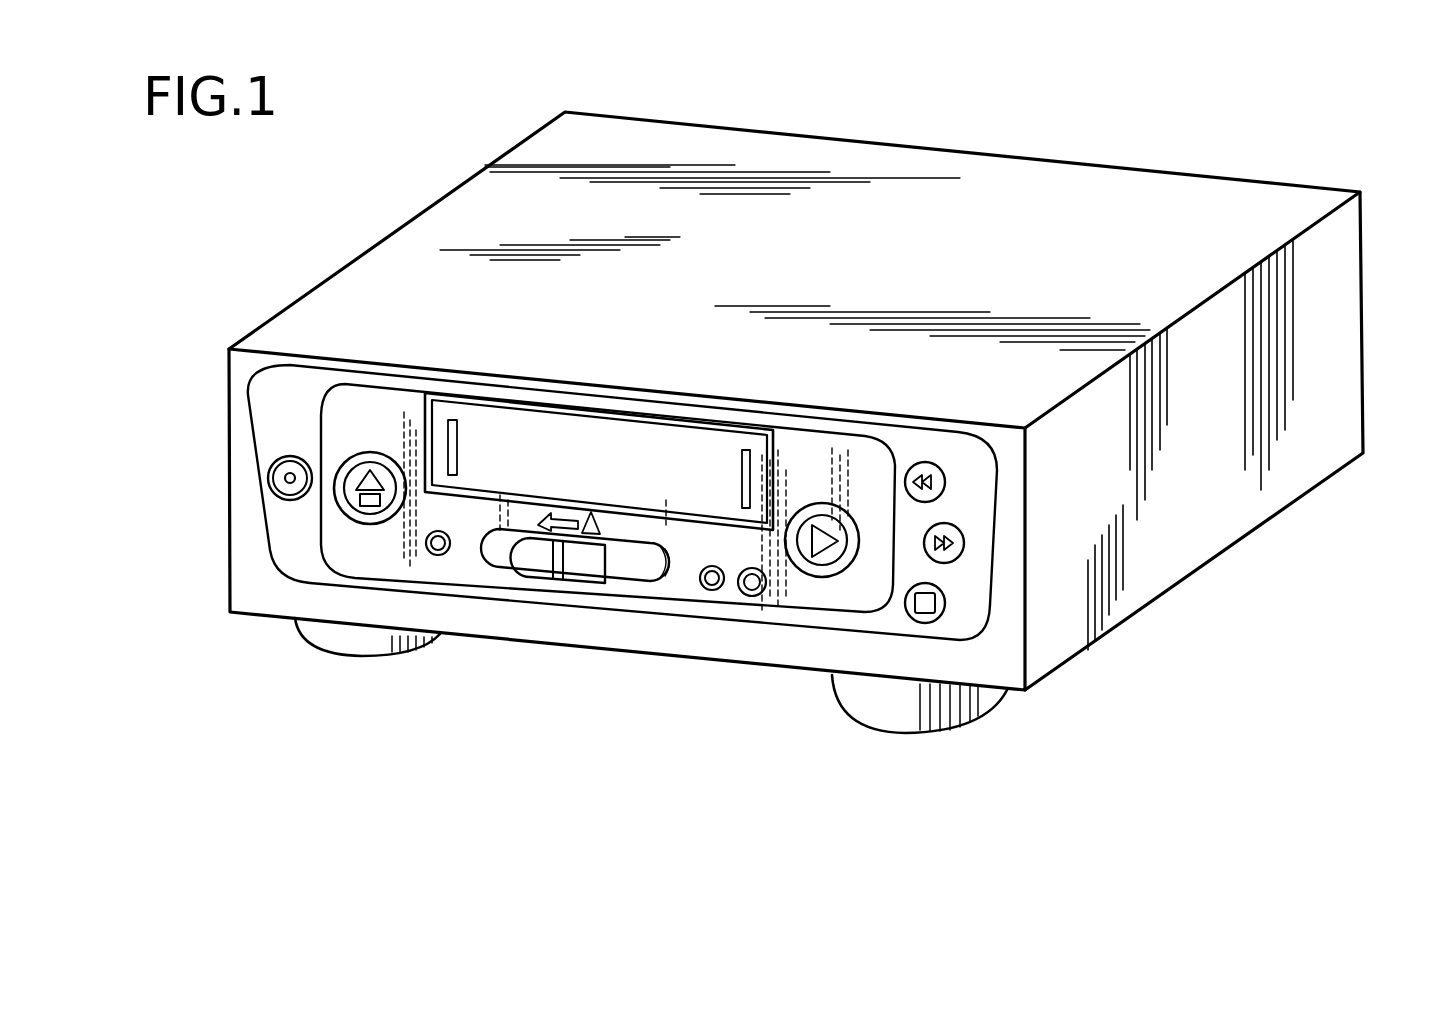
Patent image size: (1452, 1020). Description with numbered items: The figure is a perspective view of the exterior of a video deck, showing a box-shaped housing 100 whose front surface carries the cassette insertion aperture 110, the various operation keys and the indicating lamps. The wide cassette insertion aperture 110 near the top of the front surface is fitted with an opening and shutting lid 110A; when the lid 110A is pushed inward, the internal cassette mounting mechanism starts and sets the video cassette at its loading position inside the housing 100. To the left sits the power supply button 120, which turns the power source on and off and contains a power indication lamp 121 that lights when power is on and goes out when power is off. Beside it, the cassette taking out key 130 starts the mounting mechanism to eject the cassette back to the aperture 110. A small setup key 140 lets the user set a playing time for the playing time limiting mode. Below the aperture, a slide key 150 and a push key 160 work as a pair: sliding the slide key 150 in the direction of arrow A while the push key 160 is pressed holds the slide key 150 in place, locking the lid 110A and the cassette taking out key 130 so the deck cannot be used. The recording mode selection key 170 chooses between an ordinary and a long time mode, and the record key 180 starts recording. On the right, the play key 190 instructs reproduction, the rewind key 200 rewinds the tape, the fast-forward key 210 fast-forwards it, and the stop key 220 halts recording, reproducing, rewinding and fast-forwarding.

The housing 100 is at (1352, 335).
The cassette insertion aperture 110 is at (658, 450).
The opening and shutting lid 110A is at (530, 423).
The power supply button 120 is at (268, 469).
The power indication lamp 121 is at (290, 494).
The cassette taking out key 130 is at (370, 514).
The setup key 140 is at (438, 556).
The slide key 150 is at (532, 578).
The push key 160 is at (645, 582).
The recording mode selection key 170 is at (712, 591).
The record key 180 is at (752, 597).
The play key 190 is at (822, 560).
The rewind key 200 is at (946, 480).
The fast-forward key 210 is at (965, 543).
The stop key 220 is at (946, 603).